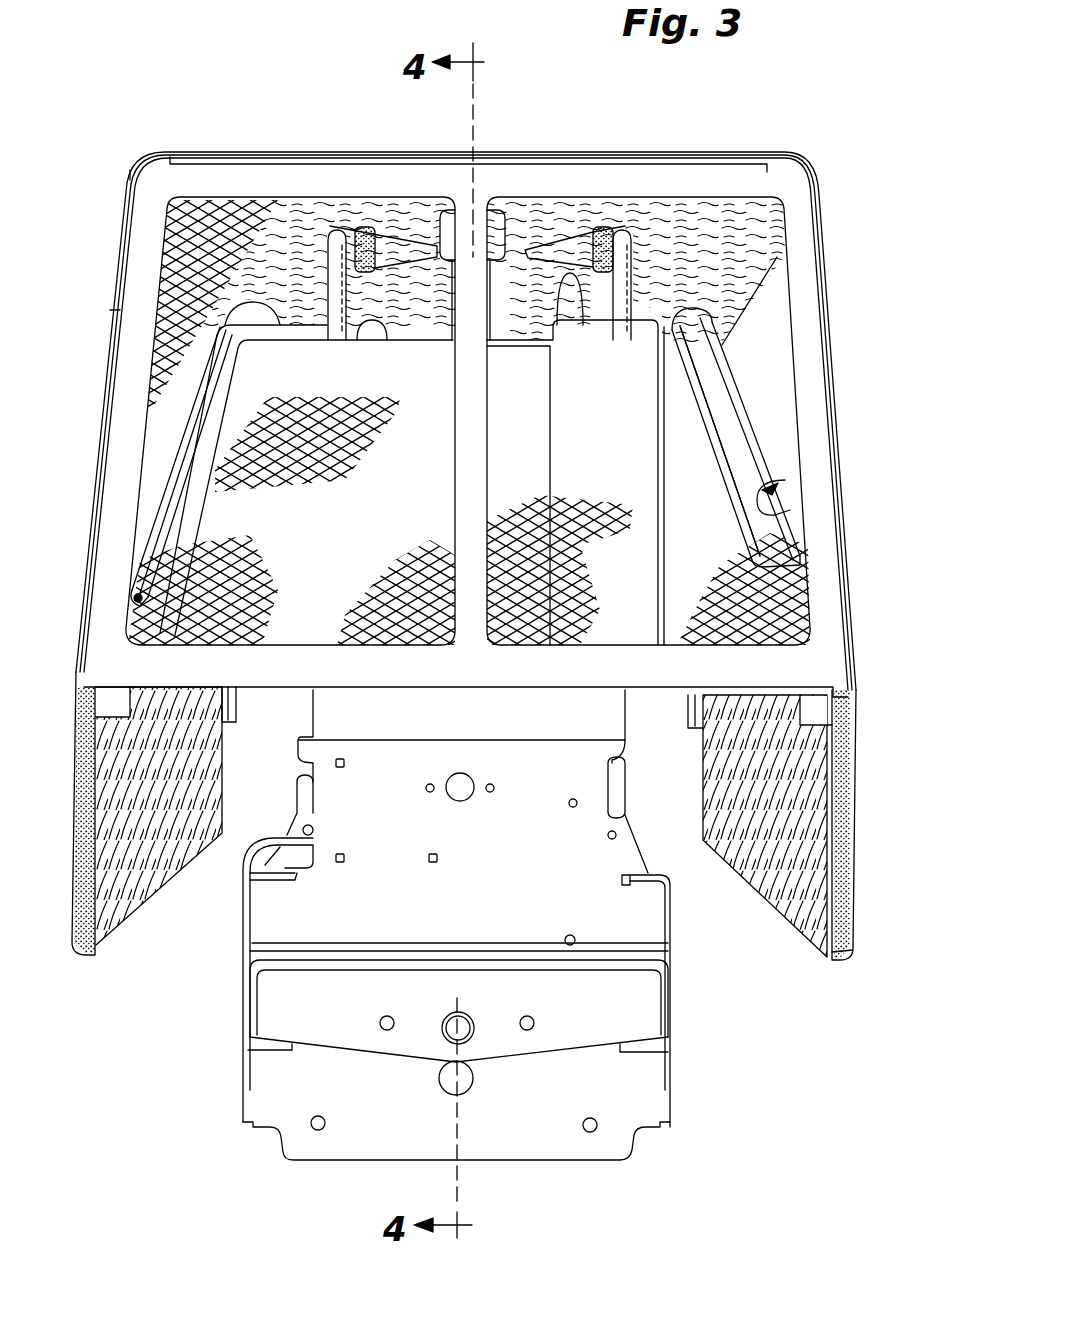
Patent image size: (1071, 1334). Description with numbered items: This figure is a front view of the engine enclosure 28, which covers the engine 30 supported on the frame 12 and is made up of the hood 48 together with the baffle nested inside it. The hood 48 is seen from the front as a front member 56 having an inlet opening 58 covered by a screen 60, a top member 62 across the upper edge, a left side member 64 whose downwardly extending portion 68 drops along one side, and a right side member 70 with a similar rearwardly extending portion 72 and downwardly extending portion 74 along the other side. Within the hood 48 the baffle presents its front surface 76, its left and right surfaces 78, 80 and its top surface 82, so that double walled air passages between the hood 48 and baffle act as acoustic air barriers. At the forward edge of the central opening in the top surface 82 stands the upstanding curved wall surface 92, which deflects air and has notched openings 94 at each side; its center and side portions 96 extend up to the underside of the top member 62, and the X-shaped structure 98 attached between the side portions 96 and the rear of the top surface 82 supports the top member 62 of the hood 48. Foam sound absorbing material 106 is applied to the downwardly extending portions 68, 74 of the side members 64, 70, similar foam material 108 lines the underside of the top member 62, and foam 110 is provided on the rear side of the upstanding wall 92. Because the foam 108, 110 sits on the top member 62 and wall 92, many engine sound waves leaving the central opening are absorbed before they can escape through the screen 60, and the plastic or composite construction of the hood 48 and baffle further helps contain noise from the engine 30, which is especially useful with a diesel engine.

The frame 12 is at (610, 1018).
The engine enclosure 28 is at (846, 128).
The engine 30 is at (472, 732).
The hood 48 is at (826, 195).
The front member 56 is at (813, 670).
The inlet opening 58 is at (790, 510).
The screen 60 is at (762, 618).
The top member 62 is at (283, 152).
The left side member 64 is at (100, 302).
The downwardly extending portion 68 is at (72, 887).
The right side member 70 is at (870, 820).
The rearwardly extending portion 72 is at (755, 400).
The downwardly extending portion 74 is at (855, 923).
The front surface 76 is at (532, 412).
The left surface 78 is at (175, 460).
The right surface 80 is at (763, 445).
The top surface 82 is at (360, 322).
The upstanding curved wall surface 92 is at (532, 323).
The notched openings 94 is at (418, 262).
The side portions 96 is at (322, 257).
The X-shaped structure 98 is at (520, 258).
The foam sound absorbing material 106 is at (163, 757).
The foam material 108 is at (700, 262).
The foam 110 is at (374, 250).